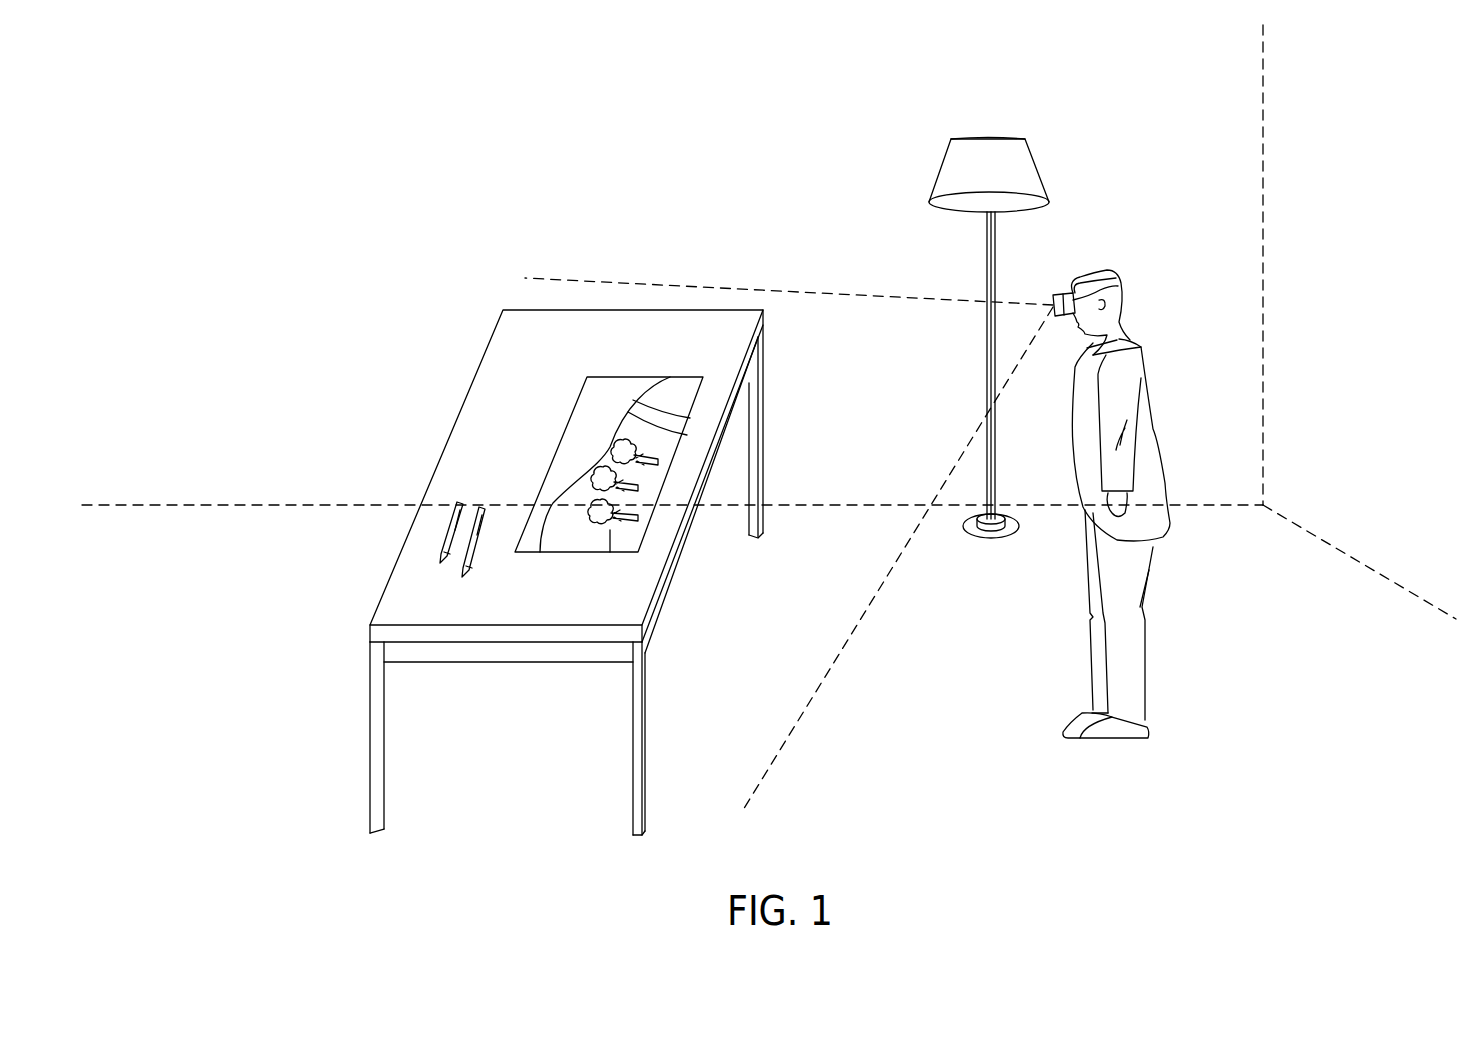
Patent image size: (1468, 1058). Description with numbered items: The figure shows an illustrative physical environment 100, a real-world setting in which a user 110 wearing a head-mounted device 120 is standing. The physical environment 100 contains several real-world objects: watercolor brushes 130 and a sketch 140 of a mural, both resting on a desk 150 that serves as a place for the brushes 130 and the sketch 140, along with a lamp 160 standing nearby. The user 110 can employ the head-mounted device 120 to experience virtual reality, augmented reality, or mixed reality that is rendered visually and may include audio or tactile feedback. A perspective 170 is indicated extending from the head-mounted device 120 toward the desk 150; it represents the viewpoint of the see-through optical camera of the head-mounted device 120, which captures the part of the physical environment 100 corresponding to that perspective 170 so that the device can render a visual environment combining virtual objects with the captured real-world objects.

The physical environment 100 is at (183, 90).
The user 110 is at (1141, 367).
The head-mounted device 120 is at (1053, 295).
The watercolor brushes 130 is at (456, 530).
The sketch 140 is at (580, 397).
The desk 150 is at (640, 748).
The lamp 160 is at (1020, 175).
The perspective 170 is at (897, 334).